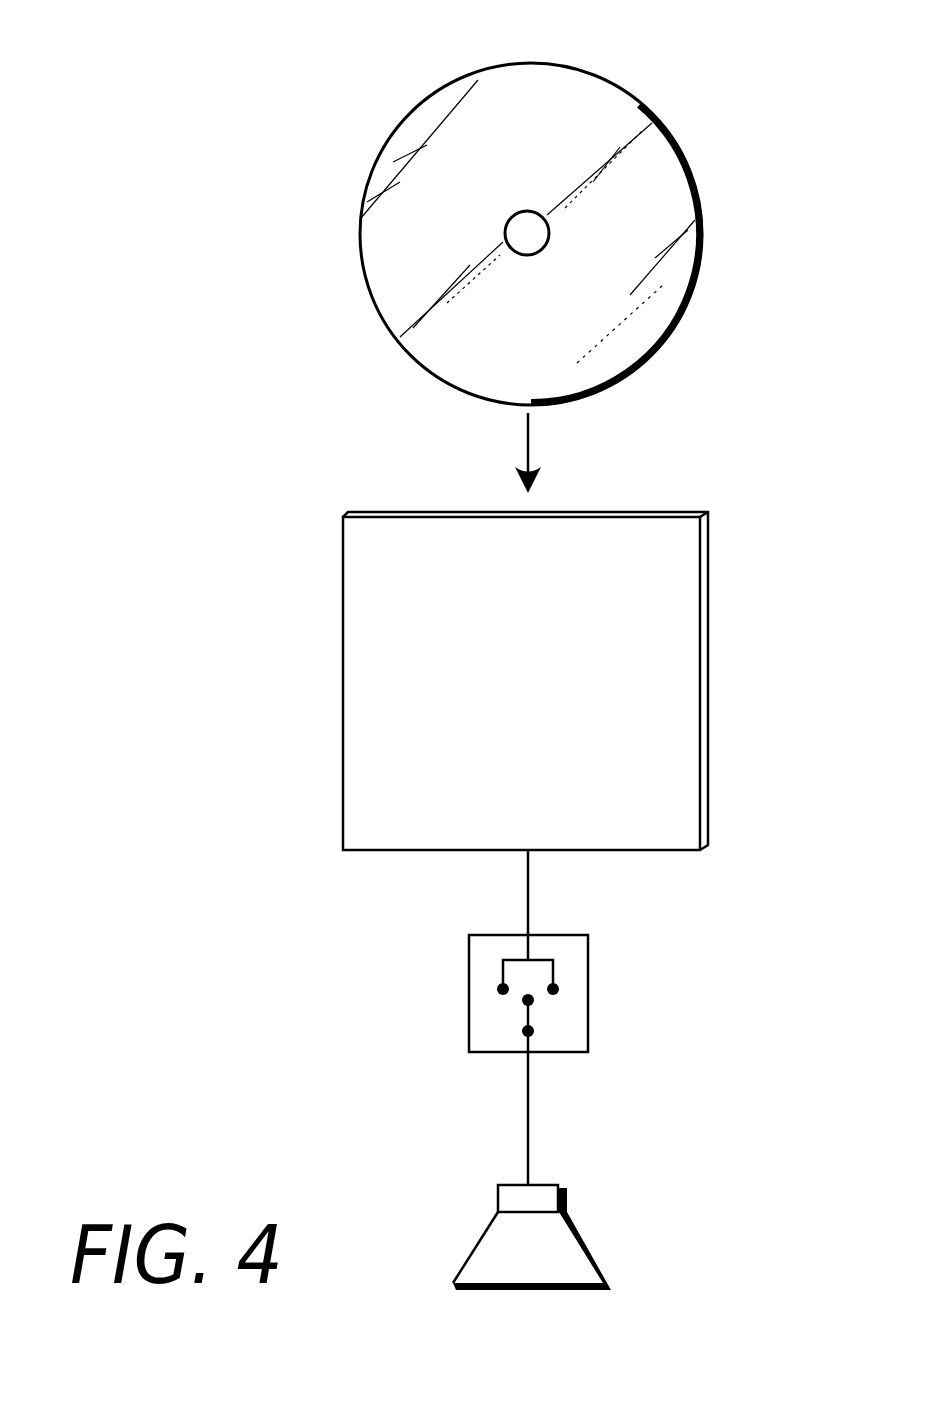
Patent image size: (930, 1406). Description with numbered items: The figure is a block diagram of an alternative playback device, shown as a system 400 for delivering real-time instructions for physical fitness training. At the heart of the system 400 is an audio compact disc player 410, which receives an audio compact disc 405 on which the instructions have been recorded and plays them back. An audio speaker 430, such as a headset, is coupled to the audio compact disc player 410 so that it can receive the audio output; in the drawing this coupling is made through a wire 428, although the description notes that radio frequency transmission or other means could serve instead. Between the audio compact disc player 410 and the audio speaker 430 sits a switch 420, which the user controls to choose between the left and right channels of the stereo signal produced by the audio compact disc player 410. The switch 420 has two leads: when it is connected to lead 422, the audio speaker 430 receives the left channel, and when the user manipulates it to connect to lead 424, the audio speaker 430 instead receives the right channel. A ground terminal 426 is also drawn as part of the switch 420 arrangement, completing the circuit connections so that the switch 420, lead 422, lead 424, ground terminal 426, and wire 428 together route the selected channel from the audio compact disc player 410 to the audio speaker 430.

The system 400 is at (130, 72).
The audio compact disc 405 is at (678, 163).
The audio compact disc player 410 is at (677, 810).
The switch 420 is at (588, 938).
The lead 422 is at (497, 988).
The lead 424 is at (559, 988).
The ground terminal 426 is at (532, 1015).
The wire 428 is at (529, 1149).
The audio speaker 430 is at (553, 1263).